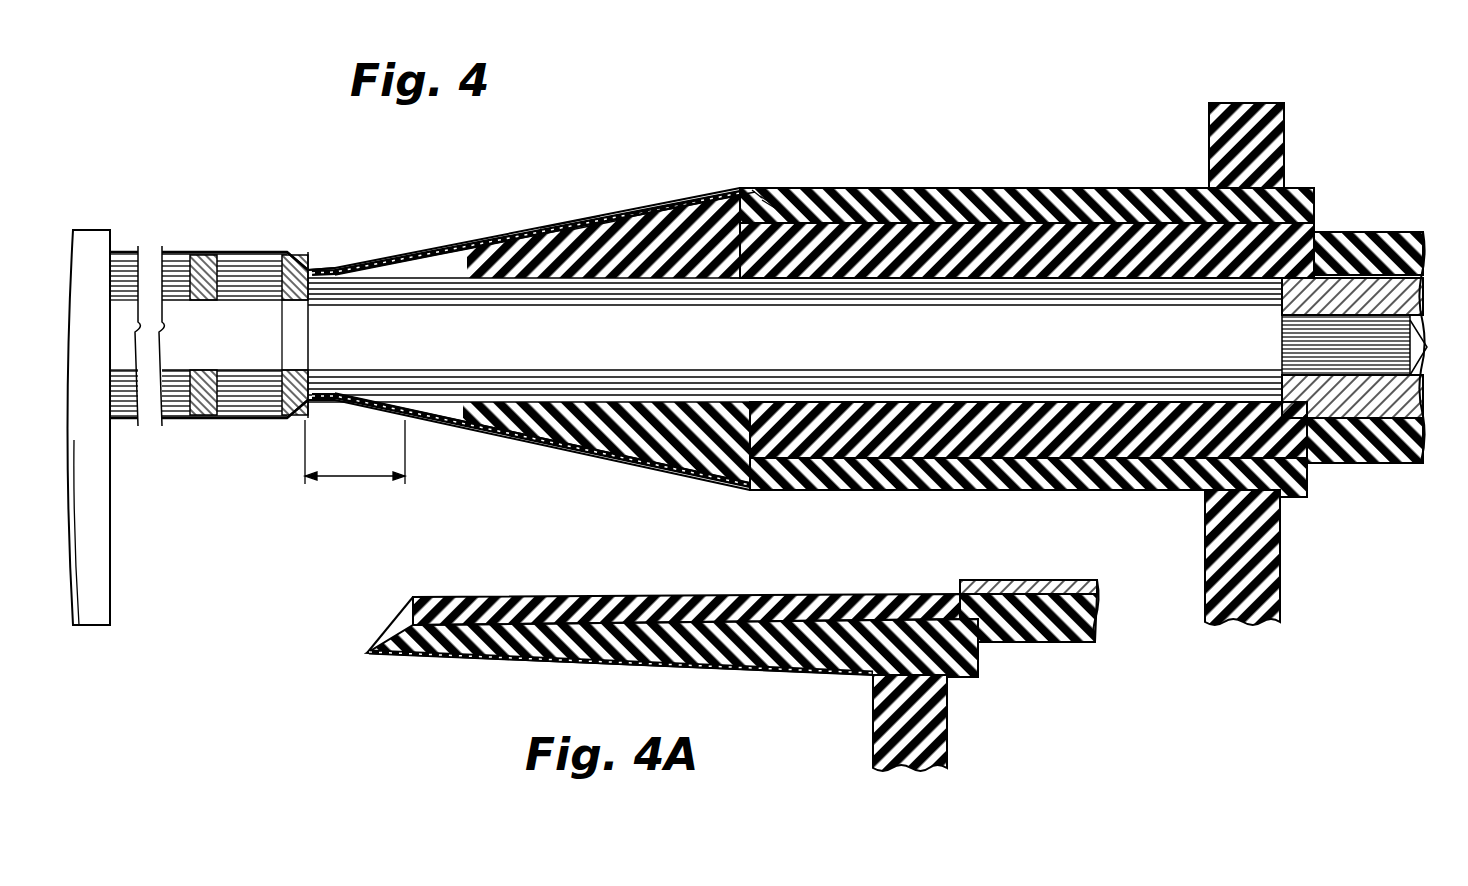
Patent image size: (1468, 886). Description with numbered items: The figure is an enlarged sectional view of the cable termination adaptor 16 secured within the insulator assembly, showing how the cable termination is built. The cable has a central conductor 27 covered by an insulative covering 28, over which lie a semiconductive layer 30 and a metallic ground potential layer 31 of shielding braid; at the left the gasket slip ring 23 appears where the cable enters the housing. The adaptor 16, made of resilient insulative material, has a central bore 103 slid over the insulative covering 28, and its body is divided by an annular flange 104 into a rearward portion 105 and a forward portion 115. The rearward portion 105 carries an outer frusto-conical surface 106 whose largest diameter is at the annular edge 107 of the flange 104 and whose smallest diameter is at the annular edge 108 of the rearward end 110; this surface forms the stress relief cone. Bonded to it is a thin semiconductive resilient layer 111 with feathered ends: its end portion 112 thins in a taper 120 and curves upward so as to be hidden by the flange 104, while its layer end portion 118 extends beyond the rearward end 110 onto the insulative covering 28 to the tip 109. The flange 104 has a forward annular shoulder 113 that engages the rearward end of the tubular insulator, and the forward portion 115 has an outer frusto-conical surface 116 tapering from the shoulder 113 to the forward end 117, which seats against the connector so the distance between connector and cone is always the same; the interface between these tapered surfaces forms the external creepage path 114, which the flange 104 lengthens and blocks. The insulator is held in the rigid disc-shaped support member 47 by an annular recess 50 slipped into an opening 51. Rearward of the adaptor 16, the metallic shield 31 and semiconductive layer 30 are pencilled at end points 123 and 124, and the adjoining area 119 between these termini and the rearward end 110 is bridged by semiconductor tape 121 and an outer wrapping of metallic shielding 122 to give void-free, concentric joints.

In FIG. 4, the cable termination adaptor 16 is at (870, 205).
In FIG. 4, the gasket slip ring 23 is at (105, 535).
In FIG. 4, the central conductor 27 is at (1363, 233).
In FIG. 4, the insulative covering 28 is at (882, 338).
In FIG. 4, the semiconductive layer 30 is at (267, 280).
In FIG. 4, the metallic ground potential layer 31 is at (175, 257).
In FIG. 4, the insulator support member 47 is at (1280, 578).
In FIG. 4A, the insulator support member 47 is at (945, 735).
In FIG. 4, the annular recess 50 is at (1218, 502).
In FIG. 4A, the annular recess 50 is at (880, 690).
In FIG. 4, the opening 51 is at (1287, 500).
In FIG. 4A, the opening 51 is at (965, 660).
In FIG. 4, the central bore 103 is at (740, 274).
In FIG. 4, the annular flange 104 is at (757, 195).
In FIG. 4, the rearward portion 105 is at (635, 212).
In FIG. 4, the outer frusto-conical surface 106 is at (562, 230).
In FIG. 4, the annular edge 107 is at (745, 195).
In FIG. 4, the annular edge 108 is at (433, 253).
In FIG. 4, the tip 109 is at (393, 277).
In FIG. 4, the rearward end 110 is at (447, 273).
In FIG. 4, the semiconductive resilient layer 111 is at (543, 227).
In FIG. 4, the end portion 112 is at (743, 193).
In FIG. 4, the forward annular shoulder 113 is at (778, 205).
In FIG. 4, the creepage path 114 is at (933, 217).
In FIG. 4, the forward portion 115 is at (1045, 217).
In FIG. 4, the outer frusto-conical surface 116 is at (980, 220).
In FIG. 4, the forward end 117 is at (1315, 233).
In FIG. 4, the layer end portion 118 is at (465, 245).
In FIG. 4, the adjoining area 119 is at (352, 478).
In FIG. 4, the taper 120 is at (767, 205).
In FIG. 4, the semiconductor tape 121 is at (320, 257).
In FIG. 4, the outer wrapping of metallic shielding 122 is at (123, 252).
In FIG. 4, the end point 123 is at (212, 303).
In FIG. 4, the end point 124 is at (293, 332).